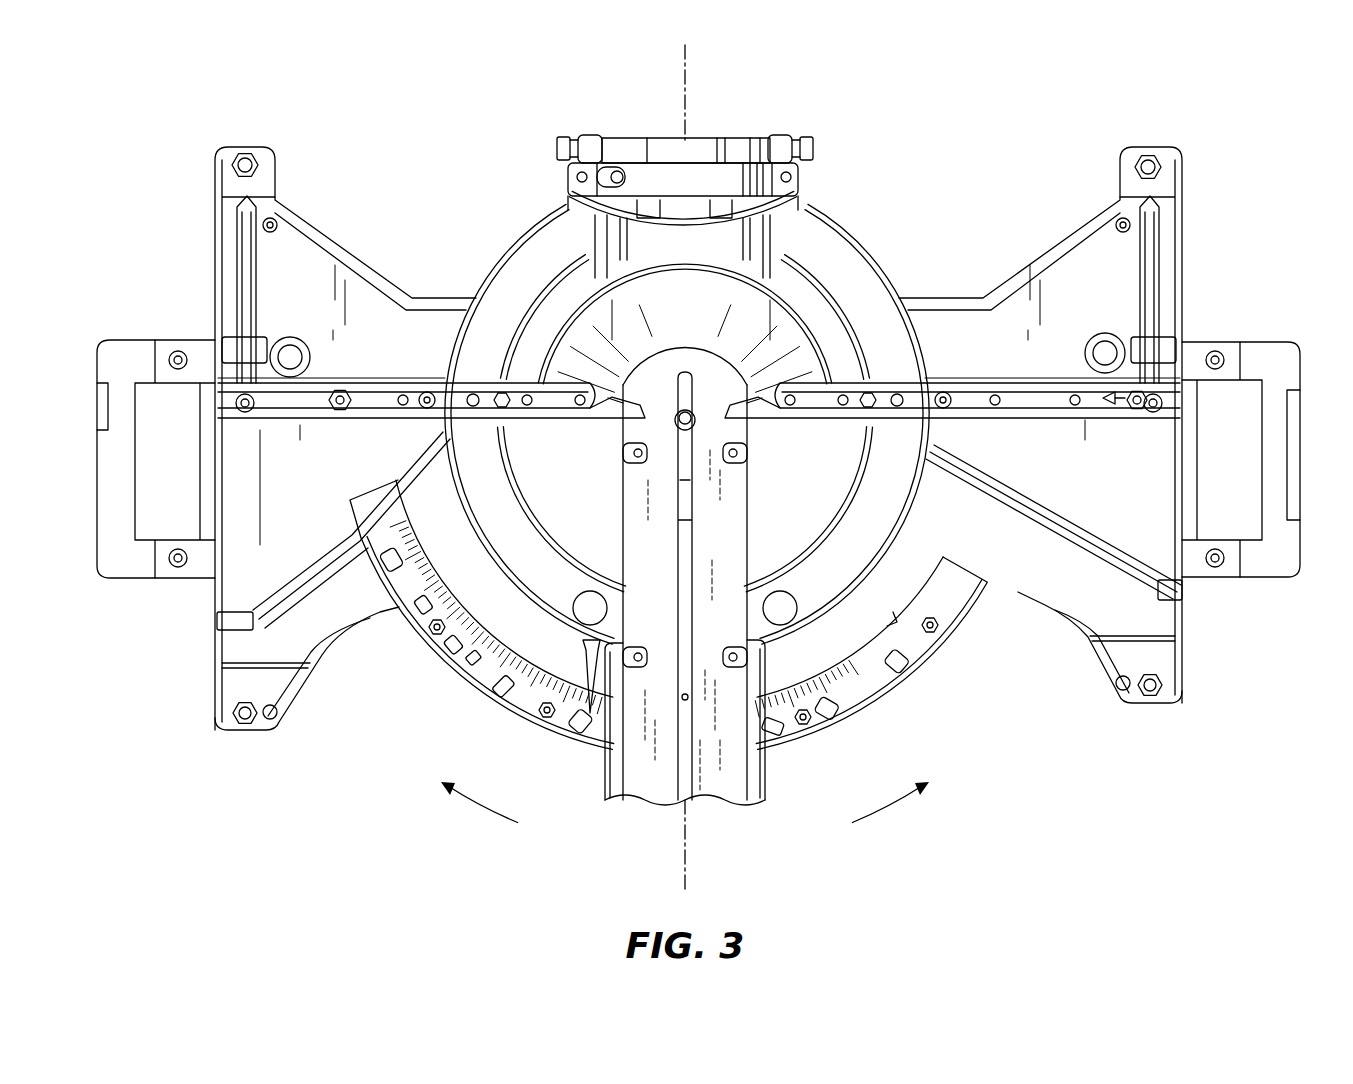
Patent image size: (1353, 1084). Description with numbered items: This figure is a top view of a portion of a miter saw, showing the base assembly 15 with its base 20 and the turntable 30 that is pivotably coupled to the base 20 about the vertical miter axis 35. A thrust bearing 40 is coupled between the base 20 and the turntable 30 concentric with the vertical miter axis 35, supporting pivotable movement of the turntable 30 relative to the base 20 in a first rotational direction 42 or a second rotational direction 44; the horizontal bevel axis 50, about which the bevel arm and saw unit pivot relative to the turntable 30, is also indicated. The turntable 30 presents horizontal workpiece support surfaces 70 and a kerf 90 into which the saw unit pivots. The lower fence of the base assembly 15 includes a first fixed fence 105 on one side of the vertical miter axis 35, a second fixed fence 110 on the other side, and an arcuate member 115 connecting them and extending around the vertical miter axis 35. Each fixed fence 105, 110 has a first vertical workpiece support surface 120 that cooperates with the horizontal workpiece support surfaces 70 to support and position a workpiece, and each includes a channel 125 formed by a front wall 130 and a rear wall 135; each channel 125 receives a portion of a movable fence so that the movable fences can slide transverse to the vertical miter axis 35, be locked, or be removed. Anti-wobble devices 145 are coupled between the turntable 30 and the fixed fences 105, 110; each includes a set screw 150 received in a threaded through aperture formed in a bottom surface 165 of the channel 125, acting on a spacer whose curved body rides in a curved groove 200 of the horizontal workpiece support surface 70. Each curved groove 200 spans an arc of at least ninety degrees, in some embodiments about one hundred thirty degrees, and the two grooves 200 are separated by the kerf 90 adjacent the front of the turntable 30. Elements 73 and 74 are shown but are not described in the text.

The base assembly 15 is at (1112, 114).
The base 20 is at (1088, 600).
The turntable 30 is at (815, 222).
The vertical miter axis 35 is at (680, 382).
The thrust bearing 40 is at (705, 400).
The first rotational direction 42 is at (479, 810).
The second rotational direction 44 is at (890, 808).
The horizontal bevel axis 50 is at (688, 850).
The horizontal workpiece support surface 70 is at (420, 643).
The tube right wall 73 is at (808, 740).
The tube left wall 74 is at (617, 773).
The kerf 90 is at (142, 326).
The first fixed fence 105 is at (340, 448).
The second fixed fence 110 is at (1042, 450).
The arcuate member 115 is at (793, 312).
The first vertical workpiece support surface 120 is at (307, 420).
The channel 125 is at (215, 372).
The front wall 130 is at (277, 420).
The rear wall 135 is at (393, 385).
The anti-wobble device 145 is at (482, 449).
The set screw 150 is at (450, 382).
The bottom surface 165 is at (463, 385).
The curved groove 200 is at (520, 547).